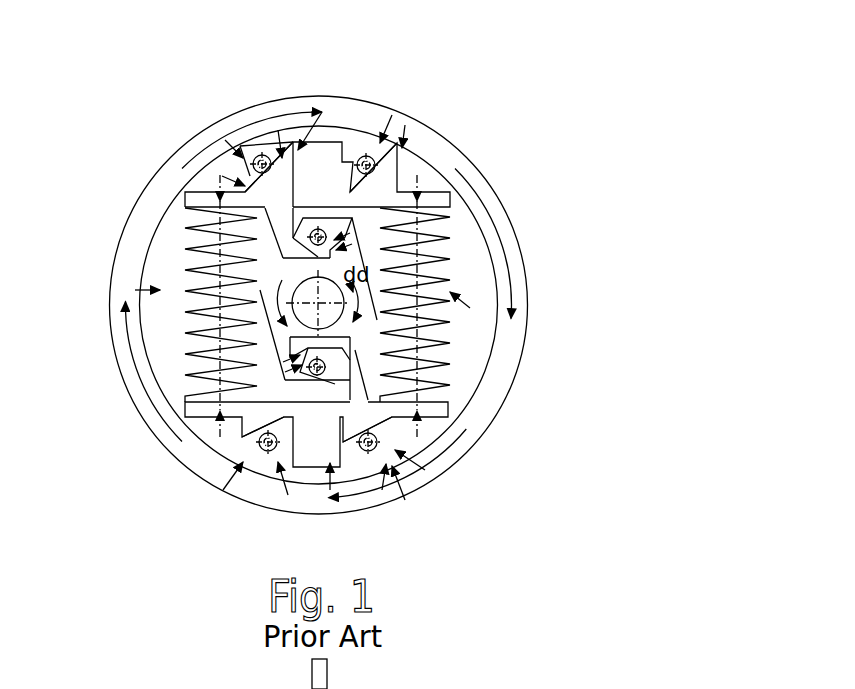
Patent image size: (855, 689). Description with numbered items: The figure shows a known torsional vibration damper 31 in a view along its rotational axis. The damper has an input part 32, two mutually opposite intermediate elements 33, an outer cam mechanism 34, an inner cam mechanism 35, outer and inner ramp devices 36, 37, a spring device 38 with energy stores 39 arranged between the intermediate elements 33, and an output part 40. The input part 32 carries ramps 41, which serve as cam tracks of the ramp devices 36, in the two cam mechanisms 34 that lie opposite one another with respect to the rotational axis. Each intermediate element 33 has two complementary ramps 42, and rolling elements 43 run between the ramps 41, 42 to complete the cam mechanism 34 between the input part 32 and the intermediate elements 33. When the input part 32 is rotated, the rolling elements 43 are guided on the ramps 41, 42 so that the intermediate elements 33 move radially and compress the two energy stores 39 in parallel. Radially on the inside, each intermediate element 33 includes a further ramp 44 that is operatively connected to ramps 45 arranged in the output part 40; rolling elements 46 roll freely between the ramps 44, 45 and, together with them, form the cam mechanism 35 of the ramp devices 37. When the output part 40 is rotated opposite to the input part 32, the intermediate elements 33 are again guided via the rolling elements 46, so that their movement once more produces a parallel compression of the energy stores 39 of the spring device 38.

The torsional vibration damper 31 is at (485, 66).
The input part 32 is at (445, 140).
The intermediate elements 33 is at (447, 202).
The cam mechanism 34 is at (254, 172).
The cam mechanism 35 is at (490, 246).
The ramp devices 36 is at (254, 158).
The ramp devices 37 is at (344, 240).
The spring device 38 is at (137, 290).
The energy stores 39 is at (185, 236).
The output part 40 is at (260, 312).
The ramps 41 is at (279, 135).
The ramps 42 is at (224, 176).
The rolling elements 43 is at (226, 141).
The further ramp 44 is at (300, 230).
The ramps 45 is at (305, 252).
The rolling elements 46 is at (327, 232).